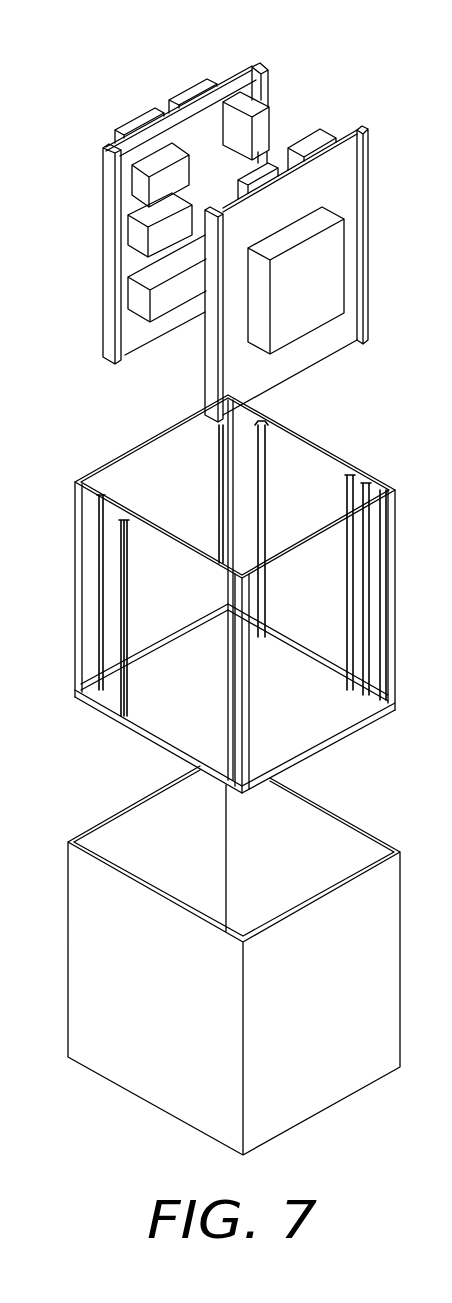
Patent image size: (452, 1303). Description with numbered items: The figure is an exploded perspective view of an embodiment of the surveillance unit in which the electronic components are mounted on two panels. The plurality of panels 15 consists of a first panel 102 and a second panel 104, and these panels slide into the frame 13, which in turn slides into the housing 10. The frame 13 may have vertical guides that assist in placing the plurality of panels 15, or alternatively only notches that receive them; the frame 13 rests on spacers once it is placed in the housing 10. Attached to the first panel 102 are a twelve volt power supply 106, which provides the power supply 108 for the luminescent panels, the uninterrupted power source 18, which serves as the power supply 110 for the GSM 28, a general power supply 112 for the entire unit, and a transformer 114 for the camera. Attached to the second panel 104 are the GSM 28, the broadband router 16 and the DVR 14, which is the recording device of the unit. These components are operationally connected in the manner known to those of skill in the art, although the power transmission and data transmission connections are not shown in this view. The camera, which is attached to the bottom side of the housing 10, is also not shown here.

The housing 10 is at (298, 1062).
The frame 13 is at (247, 697).
The recording device 14 is at (298, 315).
The plurality of panels 15 is at (363, 128).
The broadband router 16 is at (310, 145).
The uninterrupted power source 18 is at (142, 302).
The global system for mobile communication network 28 is at (273, 167).
The first panel 102 is at (255, 85).
The second panel 104 is at (350, 308).
The 12 volt power supply 106 is at (134, 127).
The power supply for the luminescent panels 108 is at (205, 85).
The power supply for the GSM 110 is at (140, 180).
The general power supply 112 is at (137, 237).
The transformer 114 is at (242, 102).